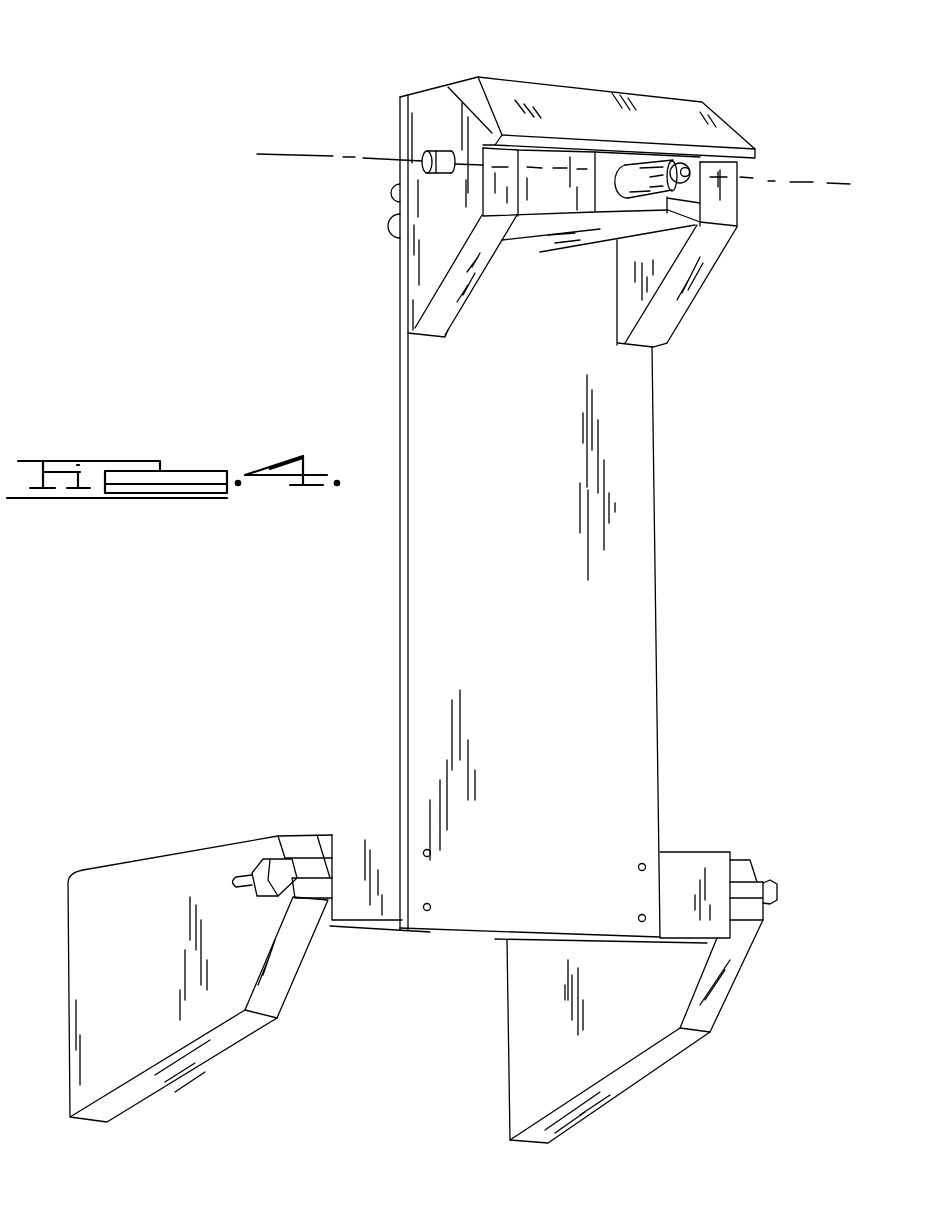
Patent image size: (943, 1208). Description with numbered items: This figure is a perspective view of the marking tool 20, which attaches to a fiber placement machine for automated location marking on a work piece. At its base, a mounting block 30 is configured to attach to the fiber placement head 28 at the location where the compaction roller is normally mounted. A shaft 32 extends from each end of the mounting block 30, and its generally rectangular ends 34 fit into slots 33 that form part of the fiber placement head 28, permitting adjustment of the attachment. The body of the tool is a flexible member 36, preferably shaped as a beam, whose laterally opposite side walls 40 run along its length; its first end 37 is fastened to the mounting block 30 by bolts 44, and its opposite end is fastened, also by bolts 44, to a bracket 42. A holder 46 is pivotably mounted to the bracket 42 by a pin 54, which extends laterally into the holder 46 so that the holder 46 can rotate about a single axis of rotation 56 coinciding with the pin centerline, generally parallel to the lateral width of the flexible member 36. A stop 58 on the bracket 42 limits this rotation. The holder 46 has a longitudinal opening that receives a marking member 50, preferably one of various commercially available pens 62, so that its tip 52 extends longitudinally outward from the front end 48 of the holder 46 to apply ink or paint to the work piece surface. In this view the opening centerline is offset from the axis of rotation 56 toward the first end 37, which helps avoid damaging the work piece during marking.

The marking tool 20 is at (352, 88).
The fiber placement head 28 is at (113, 880).
The mounting block 30 is at (687, 868).
The shaft 32 is at (766, 882).
The slots 33 is at (233, 880).
The ends 34 is at (777, 905).
The flexible member 36 is at (637, 667).
The first end 37 is at (487, 910).
The side walls 40 is at (400, 605).
The bracket 42 is at (676, 308).
The bolts 44 is at (432, 907).
The holder 46 is at (616, 240).
The front end 48 is at (602, 205).
The marking member 50 is at (642, 167).
The tip 52 is at (687, 165).
The pin 54 is at (438, 153).
The axis of rotation 56 is at (297, 157).
The stop 58 is at (576, 100).
The pens 62 is at (700, 203).